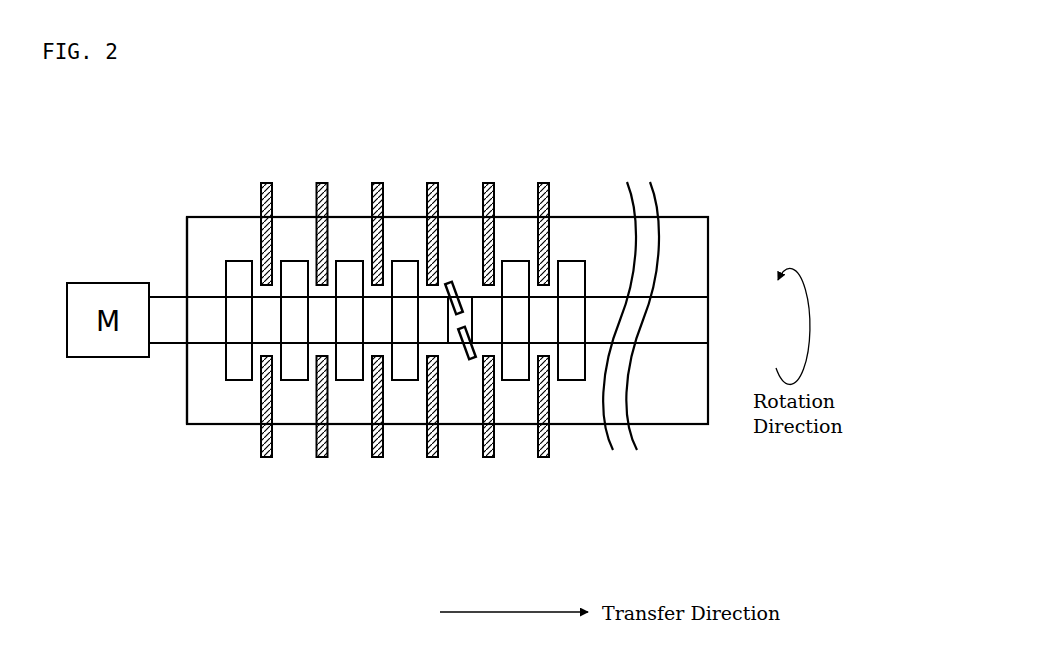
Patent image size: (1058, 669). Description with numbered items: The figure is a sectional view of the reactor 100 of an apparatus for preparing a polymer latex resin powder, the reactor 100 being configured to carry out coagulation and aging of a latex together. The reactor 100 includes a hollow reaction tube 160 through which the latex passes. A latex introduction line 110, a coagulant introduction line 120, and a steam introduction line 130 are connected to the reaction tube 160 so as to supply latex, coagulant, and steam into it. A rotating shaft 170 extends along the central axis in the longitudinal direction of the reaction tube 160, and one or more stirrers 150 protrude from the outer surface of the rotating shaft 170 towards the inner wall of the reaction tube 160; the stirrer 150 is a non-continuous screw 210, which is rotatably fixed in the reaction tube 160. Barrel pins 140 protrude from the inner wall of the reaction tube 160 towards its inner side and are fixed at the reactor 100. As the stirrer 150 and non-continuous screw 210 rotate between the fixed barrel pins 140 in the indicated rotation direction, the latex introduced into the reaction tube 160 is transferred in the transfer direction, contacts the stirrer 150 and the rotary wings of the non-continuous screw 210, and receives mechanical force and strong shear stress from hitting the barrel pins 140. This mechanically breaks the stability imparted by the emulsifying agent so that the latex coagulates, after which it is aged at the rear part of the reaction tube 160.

The reactor 100 is at (570, 466).
The latex introduction line 110 is at (227, 427).
The coagulant introduction line 120 is at (239, 215).
The steam introduction line 130 is at (239, 427).
The barrel pin 140 is at (268, 172).
The stirrer 150 is at (239, 261).
The reaction tube 160 is at (187, 403).
The rotating shaft 170 is at (679, 327).
The non-continuous screw 210 is at (463, 366).